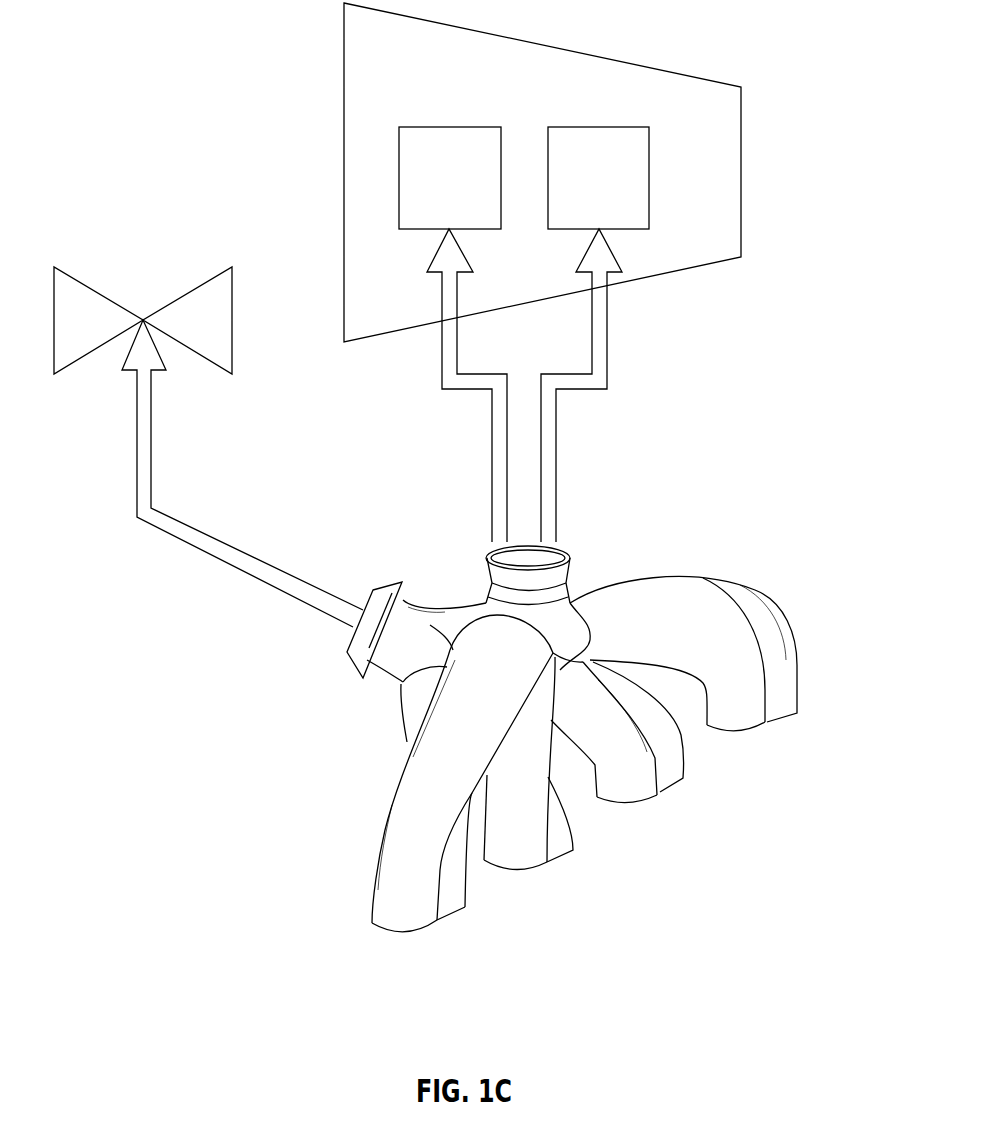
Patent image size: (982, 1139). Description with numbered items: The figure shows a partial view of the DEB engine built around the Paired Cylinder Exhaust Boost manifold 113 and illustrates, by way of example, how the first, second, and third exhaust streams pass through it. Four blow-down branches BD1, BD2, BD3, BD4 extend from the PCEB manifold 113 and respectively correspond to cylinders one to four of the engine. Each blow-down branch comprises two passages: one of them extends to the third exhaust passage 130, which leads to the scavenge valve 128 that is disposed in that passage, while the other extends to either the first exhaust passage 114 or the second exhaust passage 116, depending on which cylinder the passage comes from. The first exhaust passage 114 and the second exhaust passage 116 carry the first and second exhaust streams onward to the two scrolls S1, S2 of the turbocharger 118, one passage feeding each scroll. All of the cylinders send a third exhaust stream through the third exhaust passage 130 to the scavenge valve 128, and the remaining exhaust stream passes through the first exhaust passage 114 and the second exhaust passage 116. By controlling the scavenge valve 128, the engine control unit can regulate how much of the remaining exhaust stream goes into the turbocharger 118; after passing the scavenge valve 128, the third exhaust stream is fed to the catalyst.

The PCEB manifold 113 is at (617, 764).
The first exhaust passage 114 is at (492, 467).
The second exhaust passage 116 is at (557, 477).
The turbocharger 118 is at (541, 97).
The scavenge valve 128 is at (98, 292).
The third exhaust passage 130 is at (255, 562).
The scroll S1 is at (466, 193).
The scroll S2 is at (617, 193).
The Blow Down 1 BD1 is at (683, 679).
The Blow Down 2 BD2 is at (617, 756).
The Blow Down 3 BD3 is at (528, 786).
The Blow Down 4 BD4 is at (462, 798).